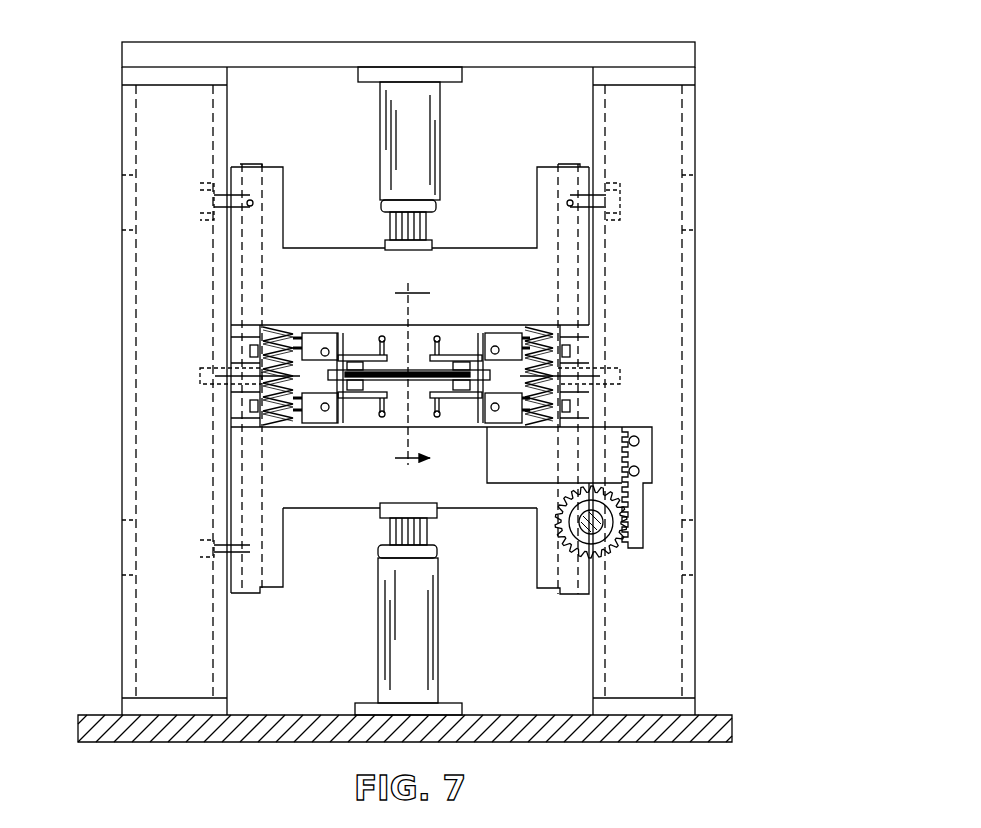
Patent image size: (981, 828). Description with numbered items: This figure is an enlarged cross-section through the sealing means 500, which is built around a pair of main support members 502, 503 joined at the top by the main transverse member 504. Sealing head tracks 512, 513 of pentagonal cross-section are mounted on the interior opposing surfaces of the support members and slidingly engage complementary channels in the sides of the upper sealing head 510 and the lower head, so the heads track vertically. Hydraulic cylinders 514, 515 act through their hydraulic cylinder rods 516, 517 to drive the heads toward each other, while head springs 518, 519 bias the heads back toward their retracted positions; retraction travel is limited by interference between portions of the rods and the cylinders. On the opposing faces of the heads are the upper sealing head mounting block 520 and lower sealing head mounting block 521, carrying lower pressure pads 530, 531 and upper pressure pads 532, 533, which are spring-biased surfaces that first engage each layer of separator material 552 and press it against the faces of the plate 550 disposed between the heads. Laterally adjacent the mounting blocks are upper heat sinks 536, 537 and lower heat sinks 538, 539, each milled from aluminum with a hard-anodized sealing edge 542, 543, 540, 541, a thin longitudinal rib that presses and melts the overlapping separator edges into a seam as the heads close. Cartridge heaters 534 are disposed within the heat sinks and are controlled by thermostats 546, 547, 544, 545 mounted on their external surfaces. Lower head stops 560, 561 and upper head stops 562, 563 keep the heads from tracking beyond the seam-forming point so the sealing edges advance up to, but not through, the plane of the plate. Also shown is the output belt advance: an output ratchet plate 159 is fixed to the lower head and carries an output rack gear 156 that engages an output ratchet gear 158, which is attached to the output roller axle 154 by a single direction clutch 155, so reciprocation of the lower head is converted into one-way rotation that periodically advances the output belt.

The sealing means 500 is at (738, 160).
The main support member 502 is at (130, 487).
The main support member 503 is at (660, 632).
The main transverse member 504 is at (555, 48).
The upper sealing head 510 is at (476, 262).
The sealing head track 512 is at (250, 228).
The sealing head track 513 is at (560, 205).
The hydraulic cylinder 514 is at (420, 148).
The hydraulic cylinder 515 is at (430, 668).
The hydraulic cylinder rod 516 is at (428, 228).
The hydraulic cylinder rod 517 is at (428, 543).
The head spring 518 is at (235, 432).
The head spring 519 is at (582, 352).
The upper sealing head mounting block 520 is at (398, 335).
The lower sealing head mounting block 521 is at (430, 423).
The lower pressure pad 530 is at (362, 412).
The lower pressure pad 531 is at (456, 412).
The upper pressure pad 532 is at (350, 358).
The upper pressure pad 533 is at (470, 358).
The cartridge heater 534 is at (320, 340).
The upper heat sink 536 is at (316, 337).
The upper heat sink 537 is at (522, 342).
The lower heat sink 538 is at (305, 425).
The lower heat sink 539 is at (505, 425).
The sealing edge 540 is at (345, 425).
The sealing edge 541 is at (495, 425).
The sealing edge 542 is at (336, 355).
The sealing edge 543 is at (497, 345).
The thermostat 544 is at (240, 383).
The thermostat 545 is at (600, 376).
The thermostat 546 is at (238, 374).
The thermostat 547 is at (600, 372).
The plate 550 is at (398, 382).
The separator material 552 is at (305, 377).
The lower head stop 560 is at (238, 408).
The lower head stop 561 is at (565, 405).
The upper head stop 562 is at (238, 350).
The upper head stop 563 is at (565, 352).
The output roller axle 154 is at (566, 520).
The single direction clutch 155 is at (570, 540).
The output rack gear 156 is at (630, 512).
The output ratchet gear 158 is at (588, 555).
The output ratchet plate 159 is at (625, 478).